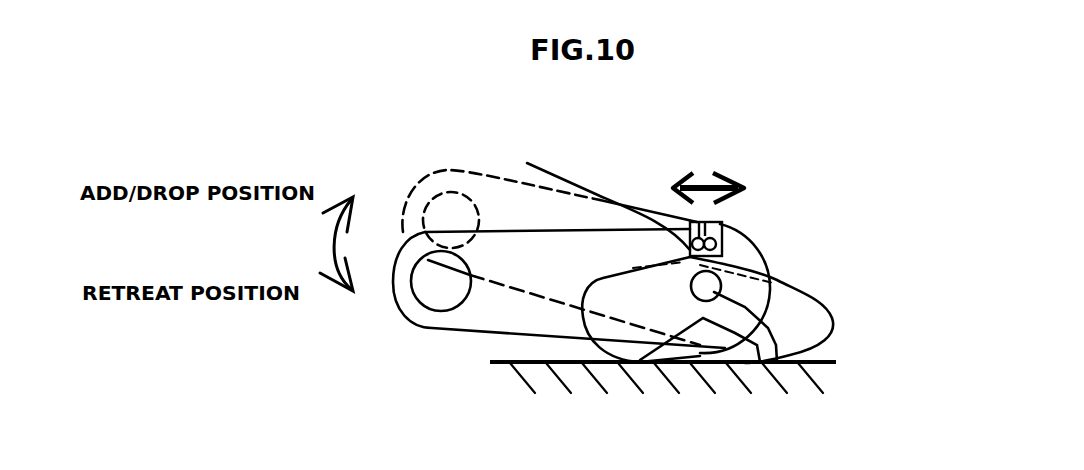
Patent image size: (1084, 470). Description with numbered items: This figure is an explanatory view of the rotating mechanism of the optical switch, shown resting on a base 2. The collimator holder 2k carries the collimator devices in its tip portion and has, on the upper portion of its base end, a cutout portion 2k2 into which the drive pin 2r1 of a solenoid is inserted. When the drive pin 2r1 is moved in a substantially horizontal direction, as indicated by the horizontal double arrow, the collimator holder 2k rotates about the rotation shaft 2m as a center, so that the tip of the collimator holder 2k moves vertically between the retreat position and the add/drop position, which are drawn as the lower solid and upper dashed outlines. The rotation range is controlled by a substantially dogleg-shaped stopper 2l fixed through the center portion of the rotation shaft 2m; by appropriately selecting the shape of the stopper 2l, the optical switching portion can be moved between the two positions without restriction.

The base 2 is at (690, 378).
The collimator holder 2k is at (441, 330).
The drive pin 2r1 is at (589, 200).
The cutout portion 2k2 is at (698, 230).
The stopper 2l is at (833, 307).
The rotation shaft 2m is at (758, 366).